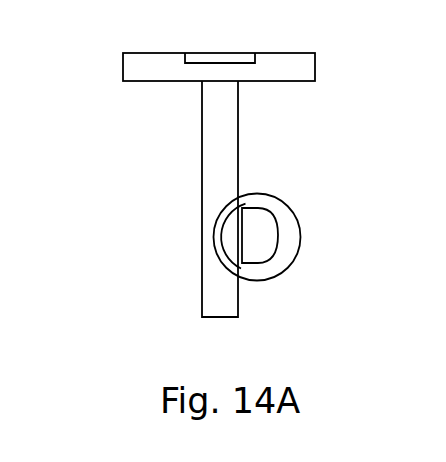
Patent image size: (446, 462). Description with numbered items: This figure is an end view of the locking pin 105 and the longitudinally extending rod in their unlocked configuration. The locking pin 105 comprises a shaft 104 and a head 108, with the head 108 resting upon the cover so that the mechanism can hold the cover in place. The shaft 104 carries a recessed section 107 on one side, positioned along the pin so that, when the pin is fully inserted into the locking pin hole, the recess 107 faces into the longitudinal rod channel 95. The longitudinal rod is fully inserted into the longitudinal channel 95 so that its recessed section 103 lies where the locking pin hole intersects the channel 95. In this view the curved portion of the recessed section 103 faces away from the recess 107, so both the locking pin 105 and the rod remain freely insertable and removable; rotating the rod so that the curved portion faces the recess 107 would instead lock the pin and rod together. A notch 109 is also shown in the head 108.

The longitudinal rod channel 95 is at (300, 248).
The recessed section 103 is at (263, 233).
The shaft 104 is at (238, 138).
The locking pin 105 is at (140, 239).
The recessed section 107 is at (232, 225).
The head 108 is at (128, 75).
The notch 109 is at (226, 62).